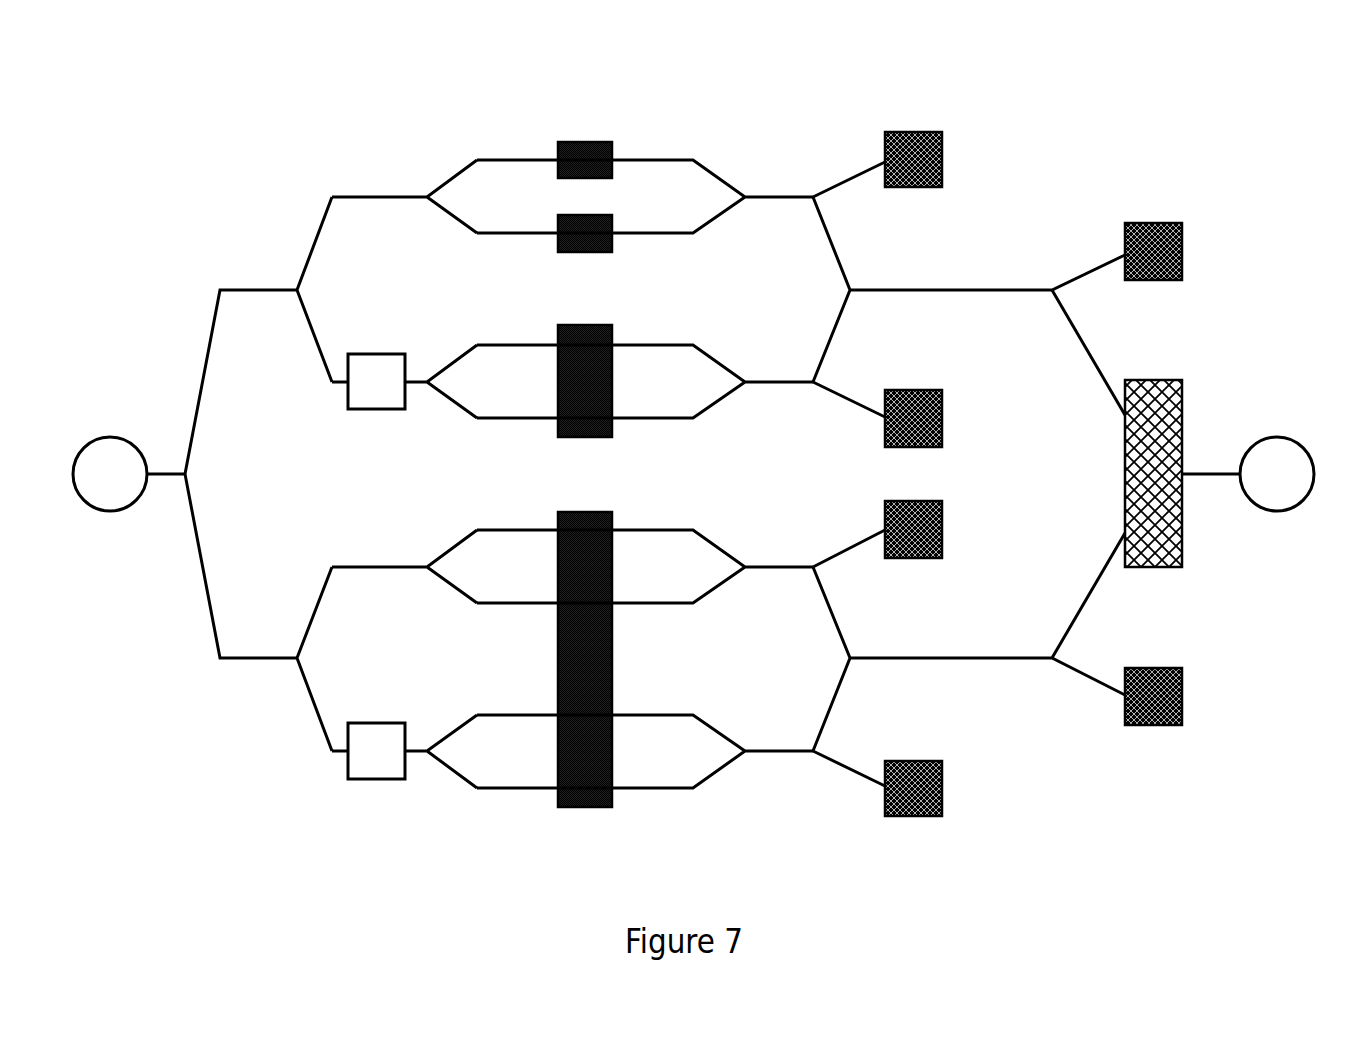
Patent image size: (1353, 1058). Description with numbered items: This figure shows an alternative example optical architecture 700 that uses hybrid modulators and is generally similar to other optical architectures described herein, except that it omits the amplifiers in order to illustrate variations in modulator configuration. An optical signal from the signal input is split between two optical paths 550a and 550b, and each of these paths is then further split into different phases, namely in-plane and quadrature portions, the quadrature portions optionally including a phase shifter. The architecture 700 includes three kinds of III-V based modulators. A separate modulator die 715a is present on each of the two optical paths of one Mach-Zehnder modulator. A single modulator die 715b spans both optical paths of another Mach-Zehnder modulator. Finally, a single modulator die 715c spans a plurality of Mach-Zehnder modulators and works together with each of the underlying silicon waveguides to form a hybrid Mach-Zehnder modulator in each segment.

The optical architecture 700 is at (238, 138).
The optical path 550a is at (255, 262).
The optical path 550b is at (273, 630).
The III-V based modulator die 715a is at (592, 160).
The III-V based modulator die 715b is at (582, 417).
The III-V based modulator die 715c is at (592, 793).